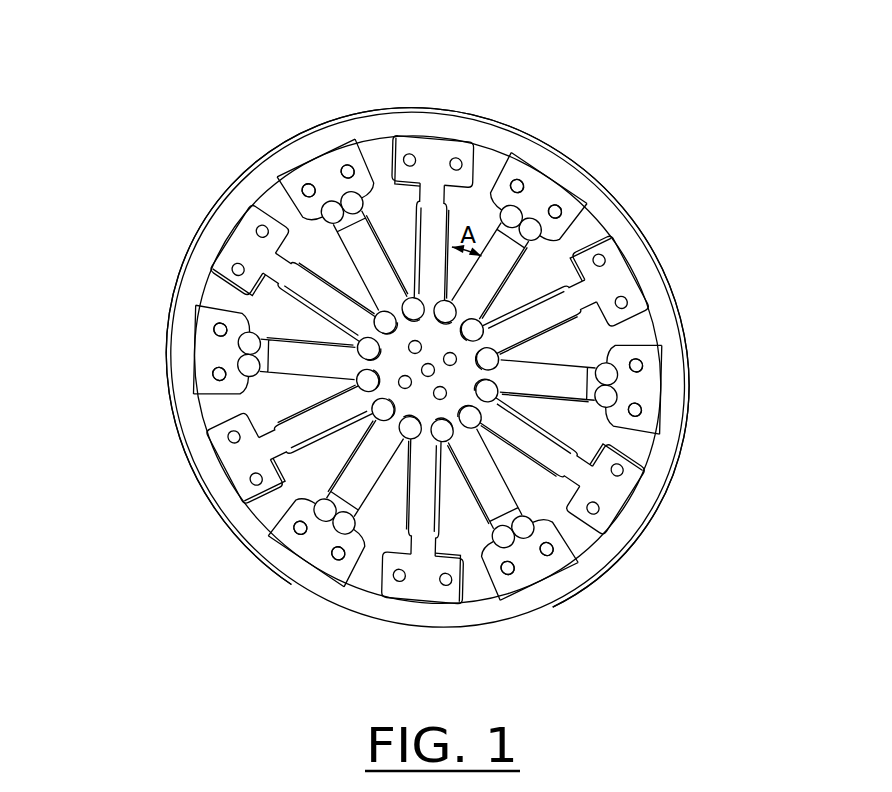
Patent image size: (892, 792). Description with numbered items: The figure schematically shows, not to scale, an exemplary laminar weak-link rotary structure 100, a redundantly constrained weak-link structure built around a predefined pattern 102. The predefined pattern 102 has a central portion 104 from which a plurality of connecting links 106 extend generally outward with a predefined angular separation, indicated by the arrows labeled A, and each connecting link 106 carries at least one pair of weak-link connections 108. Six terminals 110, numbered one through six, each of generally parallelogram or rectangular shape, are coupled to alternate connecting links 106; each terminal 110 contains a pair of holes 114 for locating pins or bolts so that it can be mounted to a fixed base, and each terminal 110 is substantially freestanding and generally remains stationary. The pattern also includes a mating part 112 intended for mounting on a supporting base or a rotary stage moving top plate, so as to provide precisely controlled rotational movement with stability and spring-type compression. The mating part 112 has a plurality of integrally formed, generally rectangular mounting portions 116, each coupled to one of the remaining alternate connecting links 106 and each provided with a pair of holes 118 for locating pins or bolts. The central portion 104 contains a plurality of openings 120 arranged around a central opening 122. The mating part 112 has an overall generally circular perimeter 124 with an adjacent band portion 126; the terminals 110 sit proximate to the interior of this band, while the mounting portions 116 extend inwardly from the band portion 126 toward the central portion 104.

The laminar weak-link rotary structure 100 is at (441, 24).
The predefined pattern 102 is at (283, 128).
The central portion 104 is at (298, 529).
The connecting links 106 is at (487, 273).
The weak-link connections 108 is at (383, 352).
The terminal 110 is at (442, 157).
The mating part 112 is at (528, 200).
The holes 114 is at (238, 270).
The mounting portions 116 is at (317, 545).
The holes 118 is at (308, 190).
The openings 120 is at (440, 393).
The central opening 122 is at (399, 398).
The circular perimeter 124 is at (380, 108).
The band portion 126 is at (423, 122).